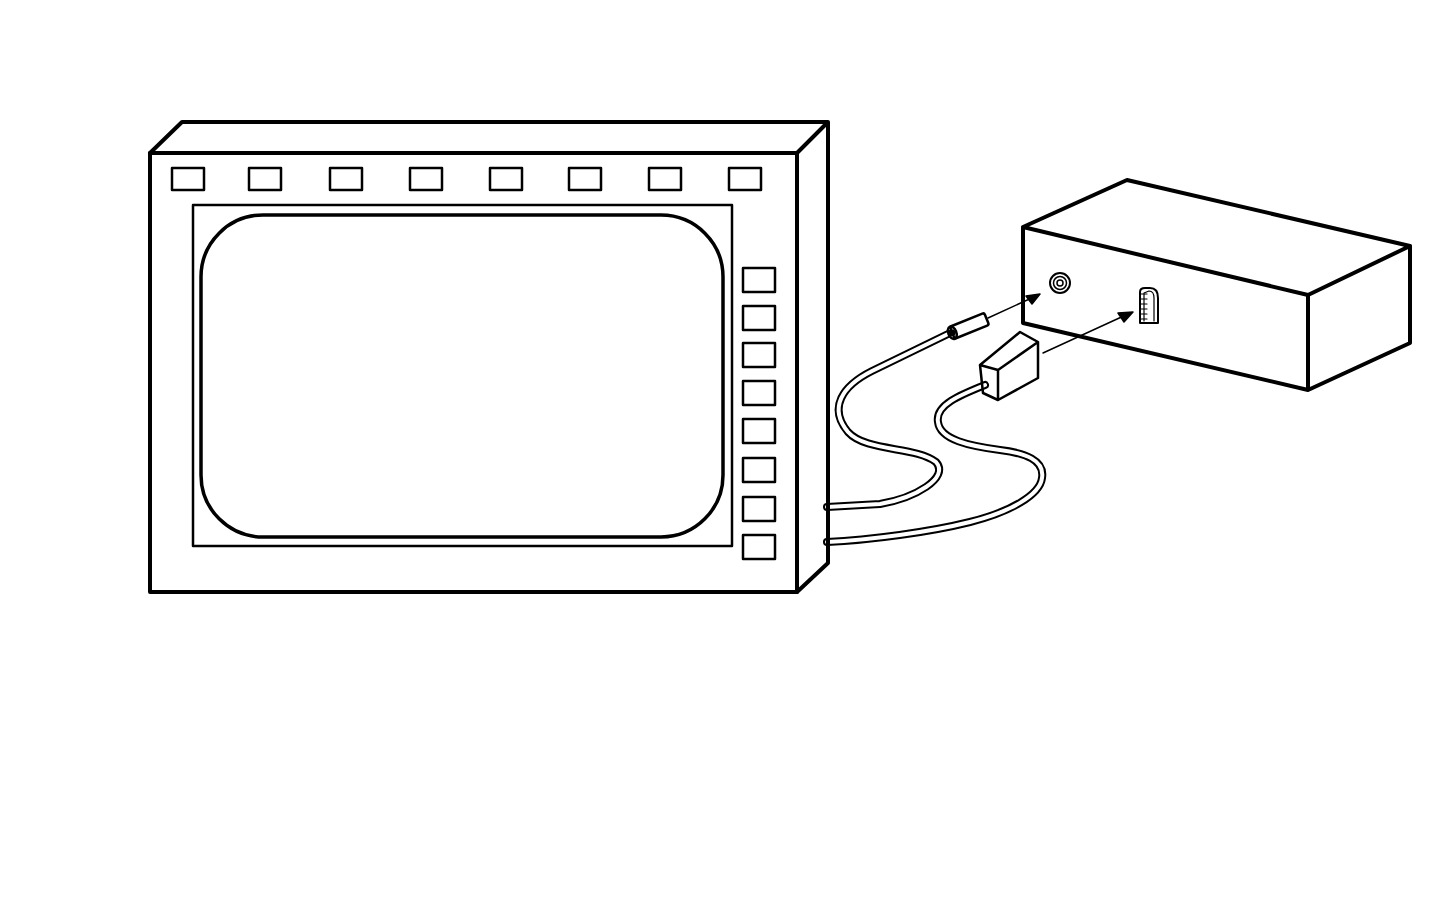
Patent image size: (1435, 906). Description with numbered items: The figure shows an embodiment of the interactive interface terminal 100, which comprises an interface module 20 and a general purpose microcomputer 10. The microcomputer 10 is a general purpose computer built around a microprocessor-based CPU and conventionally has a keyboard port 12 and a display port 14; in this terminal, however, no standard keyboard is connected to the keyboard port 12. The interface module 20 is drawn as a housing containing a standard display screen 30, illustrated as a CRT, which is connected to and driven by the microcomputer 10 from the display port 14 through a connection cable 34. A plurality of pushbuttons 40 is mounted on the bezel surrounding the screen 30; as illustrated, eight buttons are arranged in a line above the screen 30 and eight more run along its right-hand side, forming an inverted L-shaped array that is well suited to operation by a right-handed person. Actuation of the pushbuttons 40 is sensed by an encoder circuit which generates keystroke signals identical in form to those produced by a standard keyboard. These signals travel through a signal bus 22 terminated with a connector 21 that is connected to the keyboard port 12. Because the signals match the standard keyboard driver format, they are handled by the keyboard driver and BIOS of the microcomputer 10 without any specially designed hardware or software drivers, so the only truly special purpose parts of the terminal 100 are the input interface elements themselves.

The interactive interface terminal 100 is at (131, 662).
The microcomputer 10 is at (1077, 215).
The keyboard port 12 is at (1050, 277).
The display port 14 is at (1153, 325).
The interface module 20 is at (407, 597).
The connector 21 is at (962, 317).
The signal bus 22 is at (881, 372).
The display screen 30 is at (330, 517).
The connection cable 34 is at (1050, 464).
The pushbuttons 40 is at (249, 170).